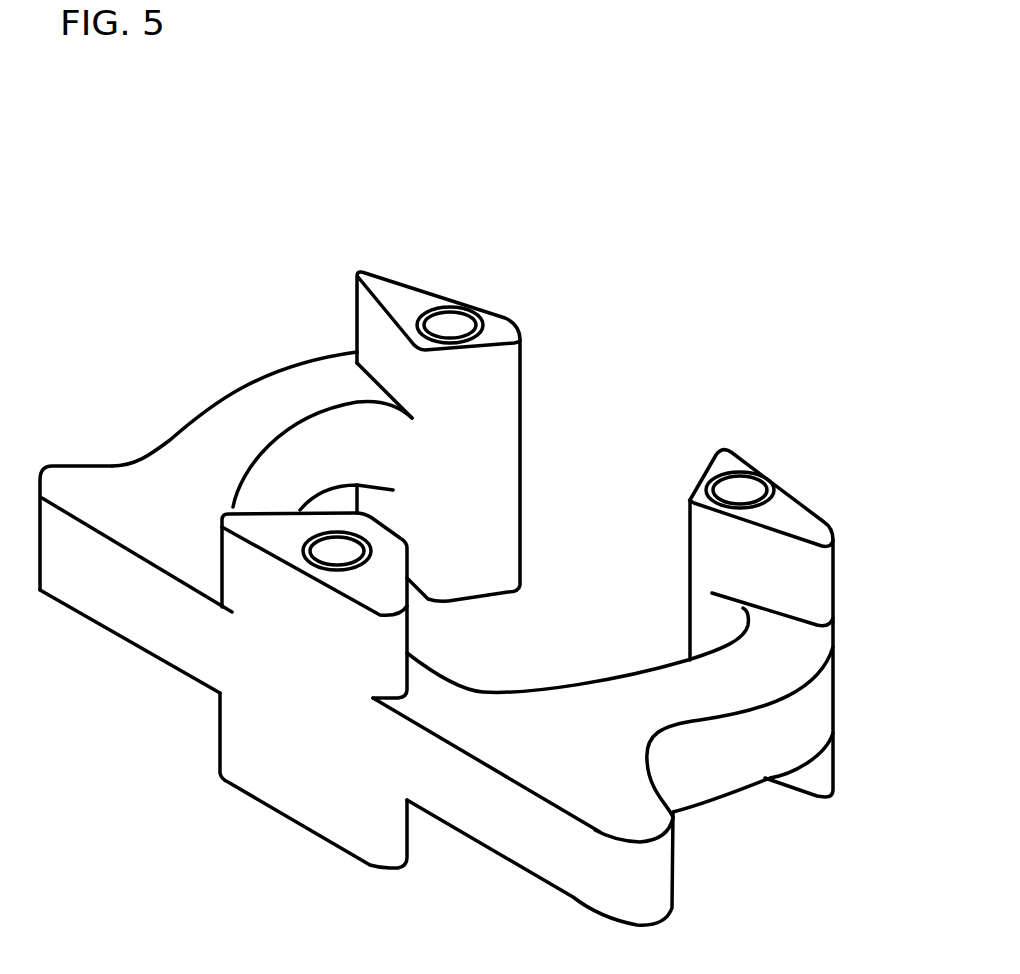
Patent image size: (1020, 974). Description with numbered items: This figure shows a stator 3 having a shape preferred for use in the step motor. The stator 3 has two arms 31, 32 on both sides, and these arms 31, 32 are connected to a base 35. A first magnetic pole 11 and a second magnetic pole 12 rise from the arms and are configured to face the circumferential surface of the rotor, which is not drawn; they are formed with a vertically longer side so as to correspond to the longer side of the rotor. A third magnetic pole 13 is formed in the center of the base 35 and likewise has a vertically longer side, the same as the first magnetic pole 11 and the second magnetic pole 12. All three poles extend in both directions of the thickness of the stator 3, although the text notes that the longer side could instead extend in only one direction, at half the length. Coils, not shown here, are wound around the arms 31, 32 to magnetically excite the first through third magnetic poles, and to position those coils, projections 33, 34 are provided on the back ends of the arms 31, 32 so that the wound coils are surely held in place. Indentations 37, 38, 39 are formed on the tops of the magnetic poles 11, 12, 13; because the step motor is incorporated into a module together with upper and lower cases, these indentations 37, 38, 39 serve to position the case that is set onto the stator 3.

The stator 3 is at (468, 253).
The first magnetic pole 11 is at (522, 410).
The second magnetic pole 12 is at (688, 540).
The third magnetic pole 13 is at (393, 550).
The arm 31 is at (257, 405).
The arm 32 is at (737, 750).
The projection 33 is at (75, 487).
The projection 34 is at (642, 820).
The base 35 is at (170, 633).
The indentation 37 is at (447, 320).
The indentation 38 is at (745, 493).
The indentation 39 is at (337, 553).